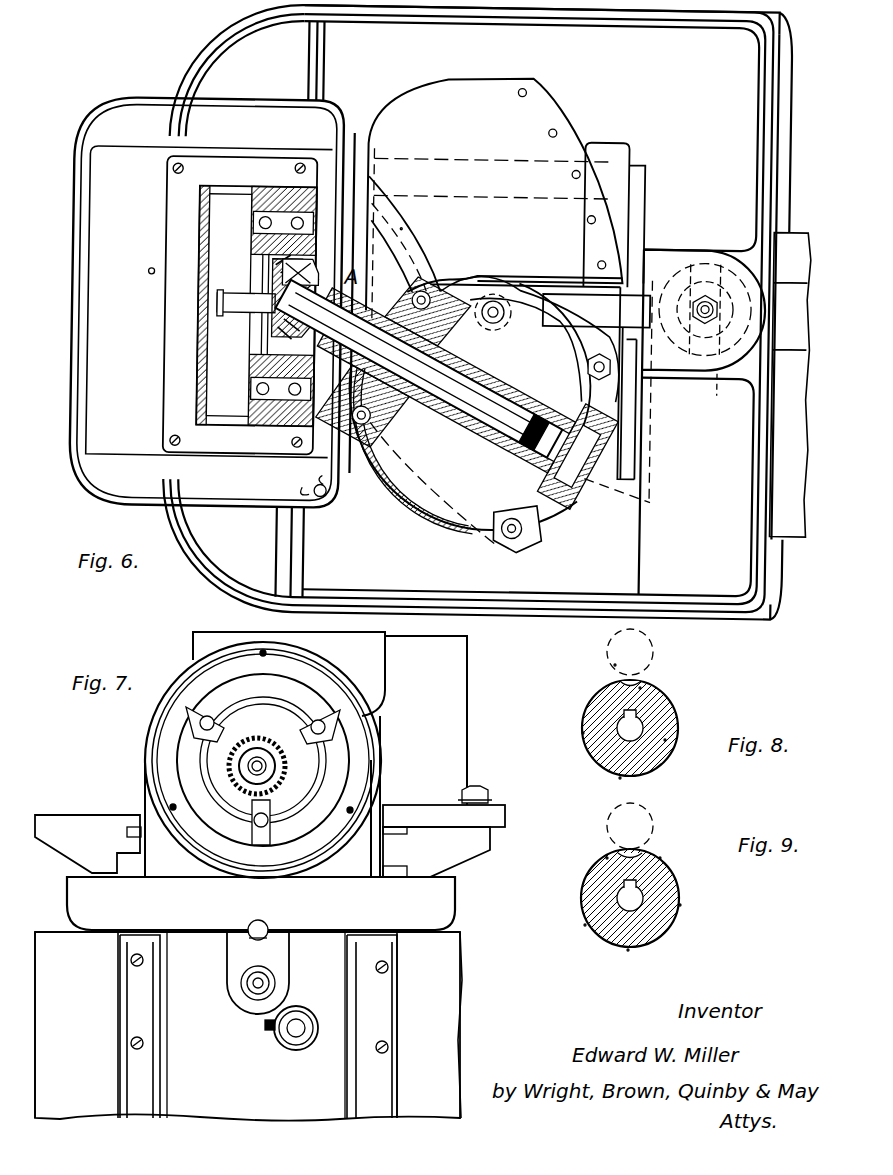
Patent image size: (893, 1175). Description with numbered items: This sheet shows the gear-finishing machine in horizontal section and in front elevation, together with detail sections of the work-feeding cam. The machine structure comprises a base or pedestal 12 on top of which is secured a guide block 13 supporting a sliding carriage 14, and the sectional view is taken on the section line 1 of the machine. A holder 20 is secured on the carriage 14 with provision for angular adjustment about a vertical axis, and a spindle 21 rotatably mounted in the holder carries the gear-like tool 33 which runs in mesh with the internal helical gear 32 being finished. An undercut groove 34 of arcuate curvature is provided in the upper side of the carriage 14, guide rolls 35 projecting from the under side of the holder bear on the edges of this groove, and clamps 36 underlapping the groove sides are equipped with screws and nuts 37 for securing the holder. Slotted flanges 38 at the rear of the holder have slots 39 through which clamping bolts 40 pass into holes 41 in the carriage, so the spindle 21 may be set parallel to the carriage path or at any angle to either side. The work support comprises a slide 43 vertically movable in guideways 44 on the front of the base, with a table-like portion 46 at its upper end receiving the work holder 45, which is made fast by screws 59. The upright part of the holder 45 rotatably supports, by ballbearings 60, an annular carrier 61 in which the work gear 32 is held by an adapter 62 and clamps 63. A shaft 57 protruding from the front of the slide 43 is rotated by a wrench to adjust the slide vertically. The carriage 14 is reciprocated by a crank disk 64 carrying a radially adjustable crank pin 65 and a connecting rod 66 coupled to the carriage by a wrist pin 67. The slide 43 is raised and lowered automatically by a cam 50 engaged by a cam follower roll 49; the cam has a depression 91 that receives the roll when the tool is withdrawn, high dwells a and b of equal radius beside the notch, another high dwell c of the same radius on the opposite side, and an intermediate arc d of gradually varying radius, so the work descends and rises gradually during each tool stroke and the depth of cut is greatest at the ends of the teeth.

In FIG. 6, the section line / side arm 1 is at (657, 312).
In FIG. 7, the base or pedestal 12 is at (450, 1022).
In FIG. 6, the guide block 13 is at (637, 215).
In FIG. 6, the sliding carriage 14 is at (463, 88).
In FIG. 7, the sliding carriage 14 is at (470, 852).
In FIG. 6, the holder 20 is at (480, 280).
In FIG. 7, the holder 20 is at (458, 700).
In FIG. 6, the spindle 21 is at (465, 451).
In FIG. 6, the internal helical gear 32 is at (283, 274).
In FIG. 7, the internal helical gear 32 is at (306, 767).
In FIG. 6, the gear-like tool 33 is at (316, 286).
In FIG. 6, the undercut groove 34 is at (400, 230).
In FIG. 7, the undercut groove 34 is at (393, 834).
In FIG. 6, the guide rolls 35 is at (492, 351).
In FIG. 7, the guide rolls 35 is at (262, 740).
In FIG. 6, the clamps 36 is at (428, 268).
In FIG. 6, the screws and nuts 37 is at (433, 296).
In FIG. 6, the slotted flanges 38 is at (484, 529).
In FIG. 7, the slotted flanges 38 is at (492, 820).
In FIG. 6, the slots 39 is at (550, 519).
In FIG. 6, the clamping bolts 40 is at (525, 543).
In FIG. 7, the clamping bolts 40 is at (478, 792).
In FIG. 6, the holes 41 is at (550, 128).
In FIG. 7, the slide 43 is at (245, 1110).
In FIG. 7, the guideways 44 is at (123, 1015).
In FIG. 6, the holder 45 is at (252, 424).
In FIG. 7, the holder 45 is at (362, 830).
In FIG. 6, the table-like portion 46 is at (100, 405).
In FIG. 7, the table-like portion 46 is at (440, 921).
In FIG. 8, the cam follower roll 49 is at (652, 652).
In FIG. 9, the cam follower roll 49 is at (645, 815).
In FIG. 8, the cam 50 is at (600, 698).
In FIG. 9, the cam 50 is at (596, 880).
In FIG. 7, the shaft 57 is at (285, 1034).
In FIG. 6, the screws 59 is at (173, 177).
In FIG. 6, the ballbearings 60 is at (292, 218).
In FIG. 6, the annular carrier 61 is at (252, 240).
In FIG. 6, the adapter 62 is at (262, 366).
In FIG. 7, the adapter 62 is at (205, 810).
In FIG. 6, the clamps 63 is at (237, 316).
In FIG. 7, the clamps 63 is at (215, 716).
In FIG. 6, the crank disk 64 is at (721, 397).
In FIG. 6, the crank pin 65 is at (708, 286).
In FIG. 6, the connecting rod 66 is at (596, 391).
In FIG. 6, the wrist pin 67 is at (505, 300).
In FIG. 8, the depression 91 is at (650, 686).
In FIG. 9, the depression 91 is at (652, 856).
In FIG. 8, the high dwell a is at (690, 661).
In FIG. 8, the high dwell b is at (600, 647).
In FIG. 8, the high dwell c is at (563, 741).
In FIG. 8, the intermediate arc d is at (688, 721).